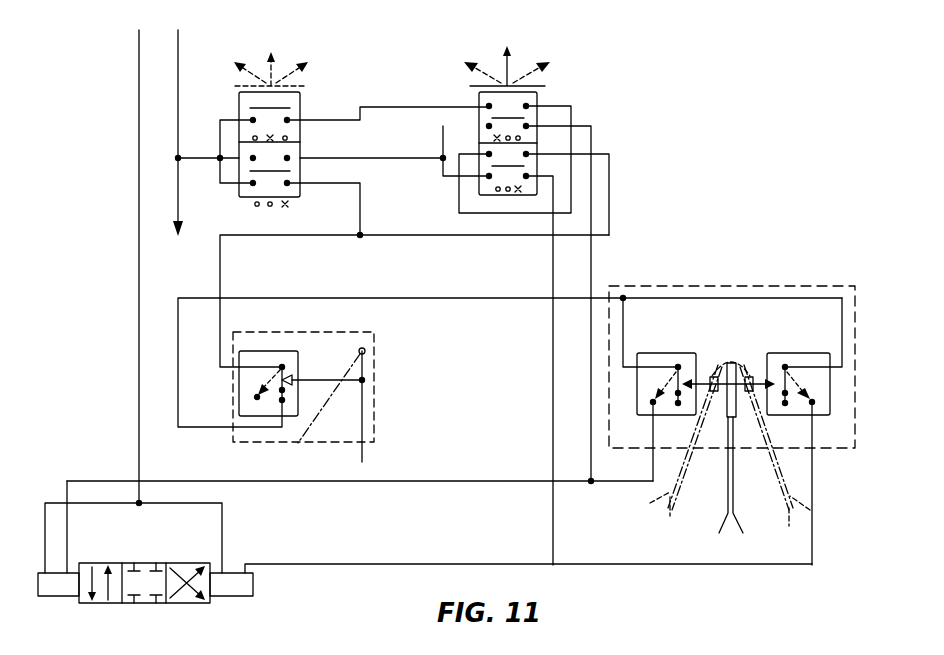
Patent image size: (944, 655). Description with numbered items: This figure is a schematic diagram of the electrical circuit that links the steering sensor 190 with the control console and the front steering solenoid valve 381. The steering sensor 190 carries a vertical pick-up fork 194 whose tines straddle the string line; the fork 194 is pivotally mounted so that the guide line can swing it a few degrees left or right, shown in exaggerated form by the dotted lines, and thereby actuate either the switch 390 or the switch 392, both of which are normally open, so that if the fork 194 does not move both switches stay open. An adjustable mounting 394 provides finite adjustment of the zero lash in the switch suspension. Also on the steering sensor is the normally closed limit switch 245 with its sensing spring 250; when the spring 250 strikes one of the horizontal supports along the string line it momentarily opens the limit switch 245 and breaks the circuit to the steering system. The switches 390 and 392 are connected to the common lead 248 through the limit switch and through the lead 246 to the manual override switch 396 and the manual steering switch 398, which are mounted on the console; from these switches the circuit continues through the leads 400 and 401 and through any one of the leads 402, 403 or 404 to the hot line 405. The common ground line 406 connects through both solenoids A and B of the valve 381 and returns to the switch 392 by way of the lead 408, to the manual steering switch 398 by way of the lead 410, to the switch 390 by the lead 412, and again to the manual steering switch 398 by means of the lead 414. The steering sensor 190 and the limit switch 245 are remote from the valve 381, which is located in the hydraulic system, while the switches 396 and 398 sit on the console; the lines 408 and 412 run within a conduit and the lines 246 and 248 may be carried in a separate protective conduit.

The steering sensor 190 is at (830, 285).
The vertical fork 194 is at (735, 510).
The limit switch 245 is at (376, 390).
The lead 246 is at (290, 235).
The common lead 248 is at (306, 298).
The sensing spring 250 is at (364, 452).
The front steering solenoid valve 381 is at (130, 603).
The switch 390 is at (665, 352).
The switch 392 is at (795, 334).
The adjustable mounting 394 is at (735, 362).
The manual override switch 396 is at (301, 110).
The manual steering switch 398 is at (479, 108).
The lead 400 is at (363, 216).
The lead 401 is at (609, 185).
The lead 402 is at (380, 160).
The lead 403 is at (394, 107).
The lead 404 is at (179, 162).
The hot line 405 is at (178, 130).
The common ground line 406 is at (139, 415).
The lead 408 is at (648, 566).
The lead 410 is at (553, 540).
The lead 412 is at (632, 481).
The lead 414 is at (591, 448).